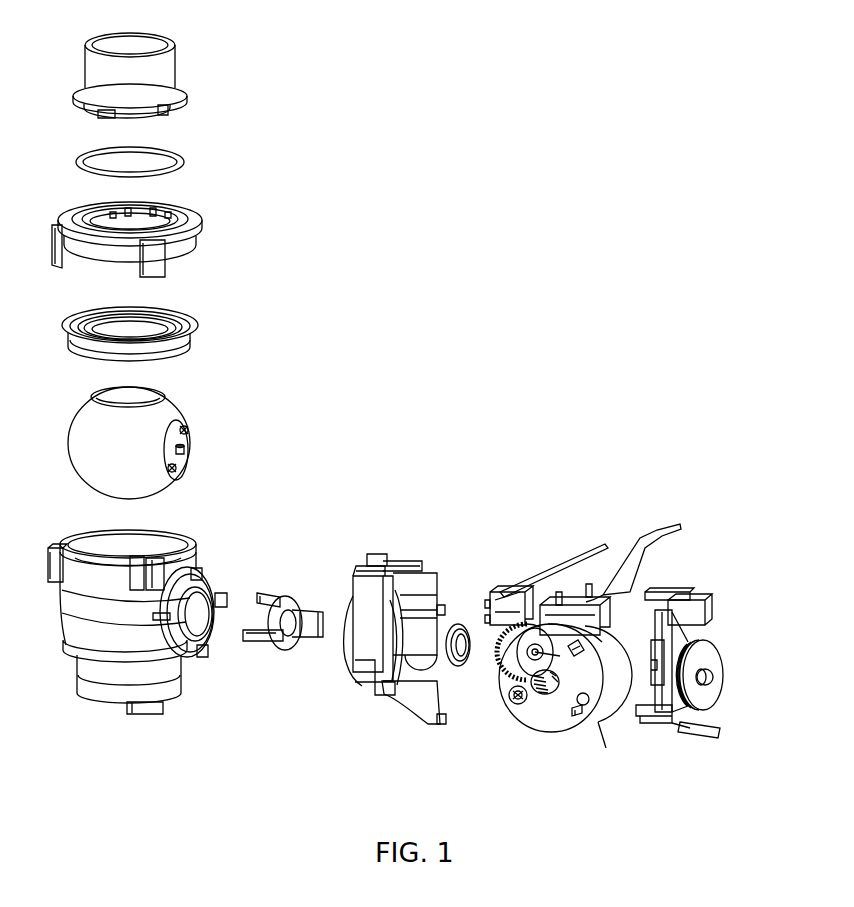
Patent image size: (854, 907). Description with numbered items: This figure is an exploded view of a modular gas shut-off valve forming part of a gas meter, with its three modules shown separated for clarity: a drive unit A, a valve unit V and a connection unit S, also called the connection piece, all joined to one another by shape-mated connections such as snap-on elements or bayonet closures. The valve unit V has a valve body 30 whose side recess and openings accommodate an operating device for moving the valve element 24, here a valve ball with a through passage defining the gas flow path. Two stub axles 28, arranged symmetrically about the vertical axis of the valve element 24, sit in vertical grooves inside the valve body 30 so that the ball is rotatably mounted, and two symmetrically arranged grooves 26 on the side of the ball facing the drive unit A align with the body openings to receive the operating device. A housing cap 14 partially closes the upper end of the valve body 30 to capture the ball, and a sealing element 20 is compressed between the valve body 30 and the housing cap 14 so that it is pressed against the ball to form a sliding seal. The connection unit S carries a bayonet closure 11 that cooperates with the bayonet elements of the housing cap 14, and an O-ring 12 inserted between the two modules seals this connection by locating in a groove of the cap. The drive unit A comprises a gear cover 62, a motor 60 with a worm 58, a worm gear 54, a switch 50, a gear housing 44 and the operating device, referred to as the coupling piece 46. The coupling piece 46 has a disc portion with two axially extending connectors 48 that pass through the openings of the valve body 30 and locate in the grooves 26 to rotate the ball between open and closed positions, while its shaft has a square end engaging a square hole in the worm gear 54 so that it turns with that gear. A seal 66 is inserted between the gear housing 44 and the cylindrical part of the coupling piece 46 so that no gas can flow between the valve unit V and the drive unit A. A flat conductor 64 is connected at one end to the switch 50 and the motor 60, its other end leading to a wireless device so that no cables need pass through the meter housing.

The connection unit S is at (183, 62).
The bayonet closure 11 is at (167, 113).
The O-ring 12 is at (184, 158).
The housing cap 14 is at (190, 224).
The sealing element 20 is at (192, 324).
The valve element 24 is at (167, 412).
The grooves 26 is at (187, 428).
The stub axles 28 is at (186, 450).
The valve body 30 is at (198, 560).
The valve unit V is at (300, 512).
The coupling piece 46 is at (297, 603).
The connectors 48 is at (257, 645).
The gear housing 44 is at (403, 560).
The seal 66 is at (462, 620).
The drive unit A is at (555, 505).
The switch 50 is at (515, 612).
The flat conductor 64 is at (630, 560).
The worm gear 54 is at (552, 692).
The worm 58 is at (542, 698).
The motor 60 is at (588, 682).
The gear cover 62 is at (668, 680).